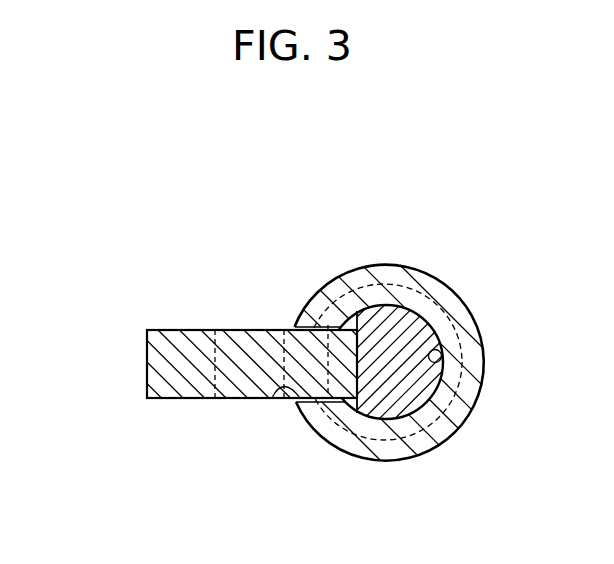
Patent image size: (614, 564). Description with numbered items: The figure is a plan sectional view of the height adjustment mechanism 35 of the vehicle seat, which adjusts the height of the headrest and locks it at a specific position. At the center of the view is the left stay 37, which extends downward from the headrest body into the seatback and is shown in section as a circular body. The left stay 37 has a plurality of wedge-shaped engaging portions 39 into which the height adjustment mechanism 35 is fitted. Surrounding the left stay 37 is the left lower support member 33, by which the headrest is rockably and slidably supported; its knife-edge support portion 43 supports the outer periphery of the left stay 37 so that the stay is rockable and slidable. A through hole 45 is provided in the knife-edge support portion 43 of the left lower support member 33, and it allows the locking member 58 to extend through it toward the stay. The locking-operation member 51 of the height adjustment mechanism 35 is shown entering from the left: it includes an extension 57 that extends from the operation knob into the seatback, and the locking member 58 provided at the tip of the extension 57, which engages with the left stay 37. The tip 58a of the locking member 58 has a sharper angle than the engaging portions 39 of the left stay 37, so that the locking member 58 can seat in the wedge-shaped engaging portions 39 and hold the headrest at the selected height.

The height adjustment mechanism 35 is at (123, 197).
The left lower support member 33 is at (453, 280).
The engaging portions 39 is at (345, 318).
The knife-edge support portion 43 is at (470, 363).
The left stay 37 is at (436, 360).
The locking-operation member 51 is at (145, 360).
The extension 57 is at (180, 342).
The locking member 58 is at (258, 342).
The tip 58a is at (358, 373).
The through hole 45 is at (272, 398).